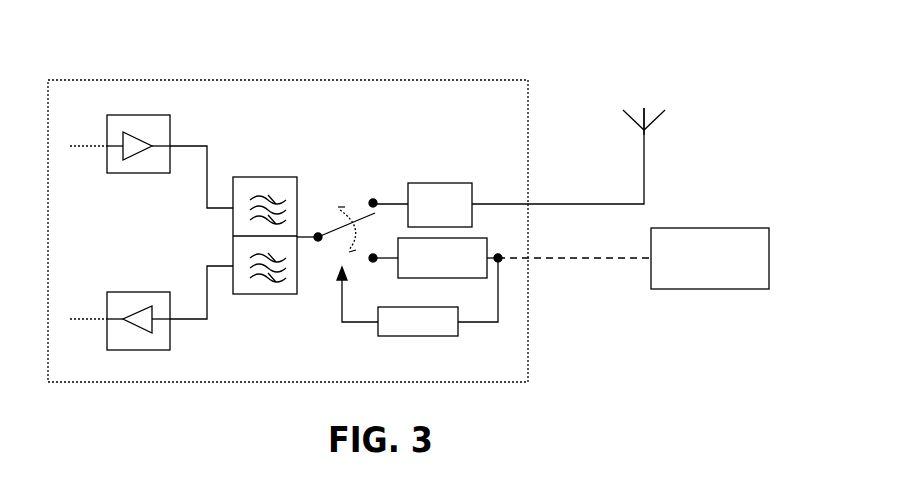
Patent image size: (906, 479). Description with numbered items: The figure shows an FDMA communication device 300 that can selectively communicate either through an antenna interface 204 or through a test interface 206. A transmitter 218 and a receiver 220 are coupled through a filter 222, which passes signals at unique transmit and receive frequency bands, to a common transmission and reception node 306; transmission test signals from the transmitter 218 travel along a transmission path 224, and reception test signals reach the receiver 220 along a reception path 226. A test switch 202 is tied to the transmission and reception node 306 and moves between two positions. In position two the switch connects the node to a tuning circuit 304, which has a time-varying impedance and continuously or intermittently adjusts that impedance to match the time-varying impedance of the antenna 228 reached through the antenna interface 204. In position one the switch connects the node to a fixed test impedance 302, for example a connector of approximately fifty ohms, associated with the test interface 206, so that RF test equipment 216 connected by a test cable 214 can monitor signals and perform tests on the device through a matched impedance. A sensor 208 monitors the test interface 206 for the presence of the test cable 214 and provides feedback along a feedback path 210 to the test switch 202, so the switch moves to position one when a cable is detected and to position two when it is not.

The FDMA communication device 300 is at (288, 79).
The transmitter 218 is at (140, 115).
The receiver 220 is at (140, 350).
The filter 222 is at (267, 177).
The transmission path 224 is at (198, 145).
The reception path 226 is at (198, 320).
The transmission and reception node 306 is at (305, 232).
The test switch 202 is at (347, 188).
The tuning circuit 304 is at (432, 183).
The antenna interface 204 is at (538, 188).
The antenna 228 is at (676, 94).
The test impedance 302 is at (444, 278).
The test interface 206 is at (538, 266).
The test cable 214 is at (576, 255).
The RF test equipment 216 is at (714, 228).
The sensor 208 is at (418, 337).
The feedback path 210 is at (353, 323).